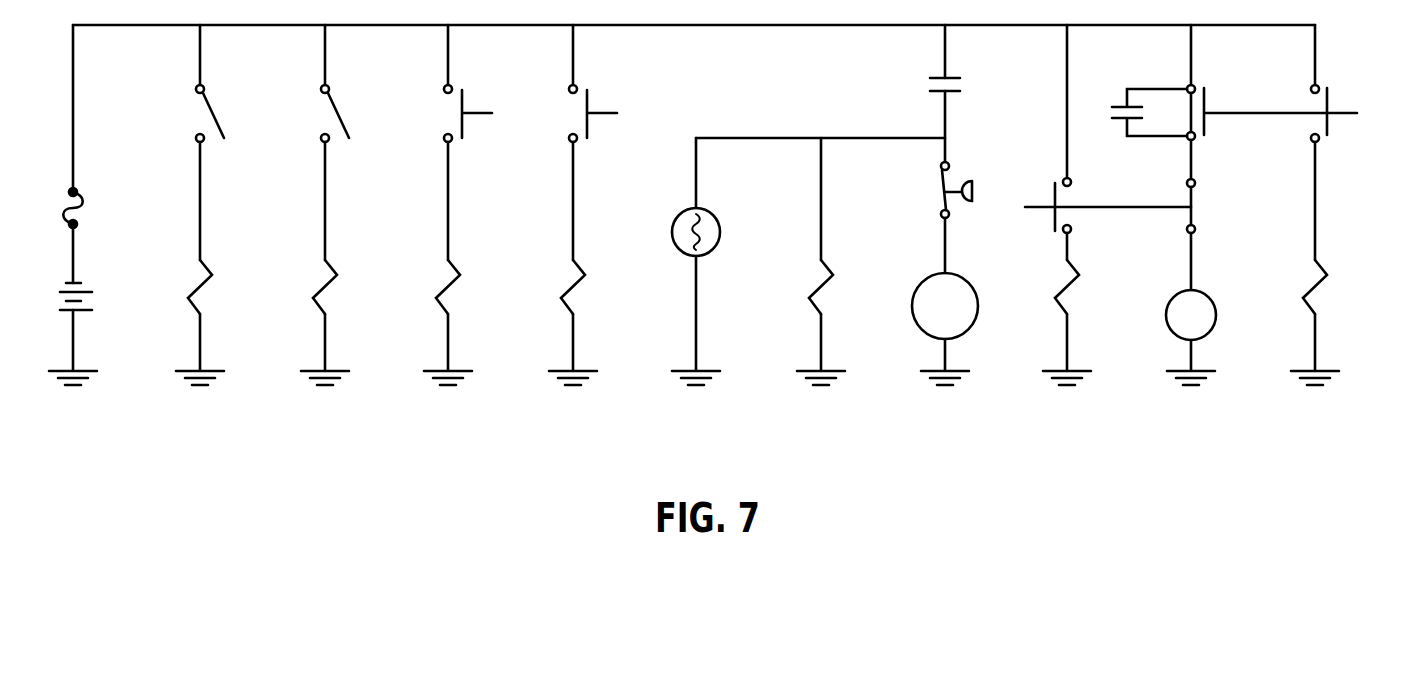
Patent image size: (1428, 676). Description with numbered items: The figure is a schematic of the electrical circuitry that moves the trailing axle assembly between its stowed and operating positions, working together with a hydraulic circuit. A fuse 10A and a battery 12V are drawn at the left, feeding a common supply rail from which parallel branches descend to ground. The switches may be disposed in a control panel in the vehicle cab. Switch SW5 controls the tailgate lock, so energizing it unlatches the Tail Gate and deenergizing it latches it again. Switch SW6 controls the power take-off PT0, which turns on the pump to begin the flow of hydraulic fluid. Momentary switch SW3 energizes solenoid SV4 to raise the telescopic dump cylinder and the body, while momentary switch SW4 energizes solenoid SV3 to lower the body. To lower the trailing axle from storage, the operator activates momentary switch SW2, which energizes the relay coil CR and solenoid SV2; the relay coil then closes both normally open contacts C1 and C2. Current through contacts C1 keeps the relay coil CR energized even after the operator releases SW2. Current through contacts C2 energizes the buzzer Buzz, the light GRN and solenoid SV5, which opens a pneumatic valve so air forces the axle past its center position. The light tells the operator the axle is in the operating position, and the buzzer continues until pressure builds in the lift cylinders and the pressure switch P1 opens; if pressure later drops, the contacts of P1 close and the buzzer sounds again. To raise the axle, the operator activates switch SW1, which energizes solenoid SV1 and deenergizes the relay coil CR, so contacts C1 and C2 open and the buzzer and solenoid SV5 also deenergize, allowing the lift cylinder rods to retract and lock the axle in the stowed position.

The 10 amp fuse 10A is at (100, 208).
The 12 volt battery 12V is at (95, 316).
The tailgate lock switch SW5 is at (234, 113).
The tail gate solenoid Tail Gate is at (231, 296).
The power take-off switch SW6 is at (359, 113).
The PTO solenoid PT0 is at (352, 296).
The dump cylinder raise switch SW3 is at (482, 116).
The solenoid S4 SV4 is at (485, 288).
The dump cylinder lower switch SW4 is at (607, 116).
The solenoid S3 SV3 is at (624, 288).
The light L1 GRN is at (717, 245).
The solenoid S5 SV5 is at (848, 287).
The relay contacts C2 is at (925, 85).
The pressure switch P1 is at (937, 190).
The buzzer Buzz is at (945, 306).
The trailing axle raise switch SW1 is at (1108, 205).
The solenoid S1 SV1 is at (1097, 297).
The relay contacts C1 is at (1136, 112).
The relay coil CR is at (1191, 315).
The trailing axle lower switch SW2 is at (1280, 113).
The solenoid S2 SV2 is at (1352, 295).